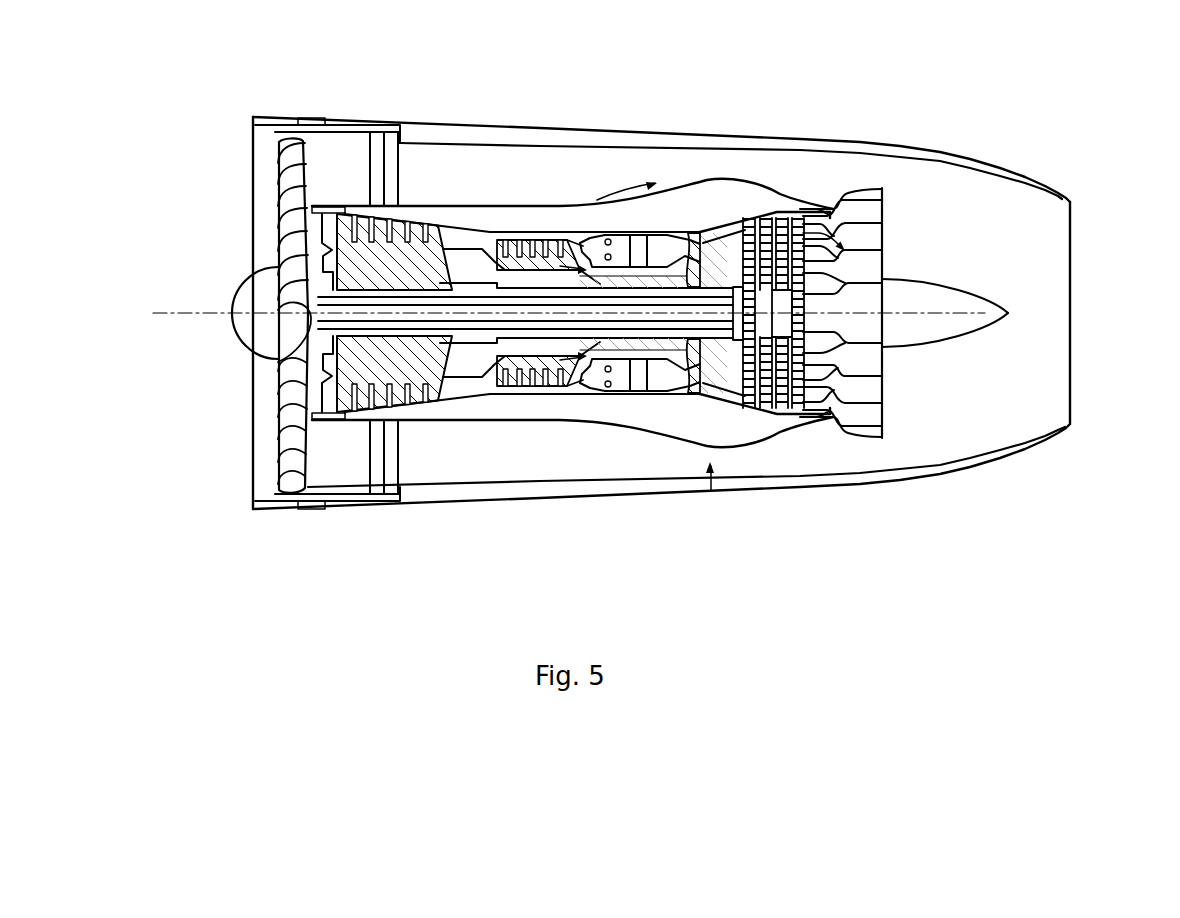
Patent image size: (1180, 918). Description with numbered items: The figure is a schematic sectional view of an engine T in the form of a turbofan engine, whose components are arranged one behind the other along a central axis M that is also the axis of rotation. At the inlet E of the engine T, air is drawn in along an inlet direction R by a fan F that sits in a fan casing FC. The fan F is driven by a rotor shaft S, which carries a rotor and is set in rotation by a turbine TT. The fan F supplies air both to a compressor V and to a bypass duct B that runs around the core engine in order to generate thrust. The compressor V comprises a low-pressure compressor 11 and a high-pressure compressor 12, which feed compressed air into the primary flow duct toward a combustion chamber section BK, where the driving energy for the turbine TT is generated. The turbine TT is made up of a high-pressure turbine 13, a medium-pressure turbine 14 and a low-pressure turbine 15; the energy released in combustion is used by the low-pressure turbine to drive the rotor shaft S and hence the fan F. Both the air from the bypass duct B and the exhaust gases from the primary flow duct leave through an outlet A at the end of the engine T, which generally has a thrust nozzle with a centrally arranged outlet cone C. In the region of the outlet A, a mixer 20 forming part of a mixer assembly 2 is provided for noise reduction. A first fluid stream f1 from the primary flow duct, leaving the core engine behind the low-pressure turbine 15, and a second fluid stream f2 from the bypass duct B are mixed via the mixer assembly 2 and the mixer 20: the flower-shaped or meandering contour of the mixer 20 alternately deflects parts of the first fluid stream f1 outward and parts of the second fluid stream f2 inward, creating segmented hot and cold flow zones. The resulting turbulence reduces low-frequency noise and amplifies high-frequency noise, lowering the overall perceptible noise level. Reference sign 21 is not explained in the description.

The mixer assembly 2 is at (843, 436).
The low-pressure compressor 11 is at (423, 257).
The high-pressure compressor 12 is at (533, 358).
The high-pressure turbine 13 is at (697, 240).
The medium-pressure turbine 14 is at (712, 393).
The low-pressure turbine 15 is at (760, 212).
The mixer 20 is at (883, 212).
The core cowl 21 is at (778, 210).
The outlet A is at (1077, 250).
The bypass duct B is at (823, 192).
The combustion chamber section BK is at (617, 370).
The outlet cone C is at (978, 337).
The inlet E is at (262, 422).
The fan F is at (303, 498).
The fan casing FC is at (365, 502).
The central axis M is at (912, 314).
The inlet direction R is at (212, 207).
The rotor shaft S is at (702, 405).
The engine T is at (966, 117).
The turbine TT is at (711, 490).
The compressor V is at (432, 462).
The first fluid stream f1 is at (830, 210).
The second fluid stream f2 is at (630, 186).